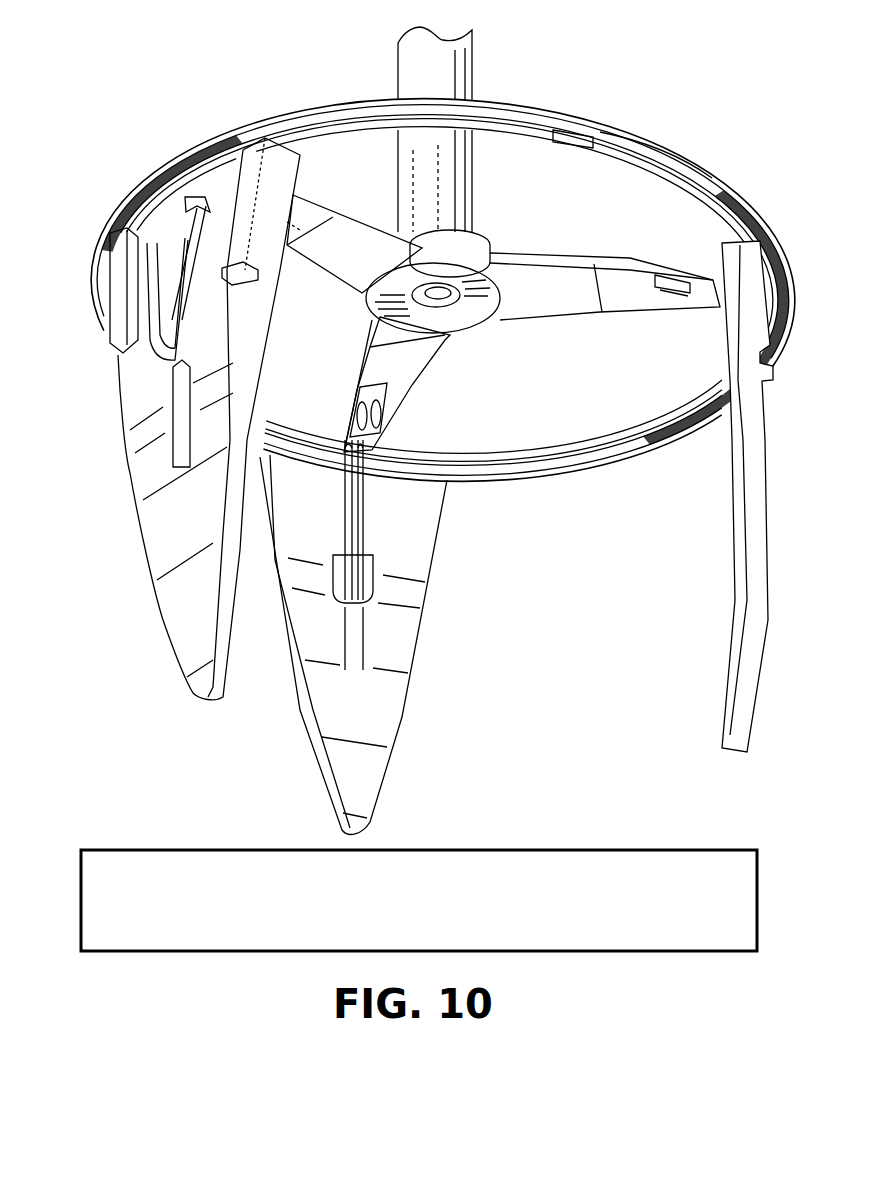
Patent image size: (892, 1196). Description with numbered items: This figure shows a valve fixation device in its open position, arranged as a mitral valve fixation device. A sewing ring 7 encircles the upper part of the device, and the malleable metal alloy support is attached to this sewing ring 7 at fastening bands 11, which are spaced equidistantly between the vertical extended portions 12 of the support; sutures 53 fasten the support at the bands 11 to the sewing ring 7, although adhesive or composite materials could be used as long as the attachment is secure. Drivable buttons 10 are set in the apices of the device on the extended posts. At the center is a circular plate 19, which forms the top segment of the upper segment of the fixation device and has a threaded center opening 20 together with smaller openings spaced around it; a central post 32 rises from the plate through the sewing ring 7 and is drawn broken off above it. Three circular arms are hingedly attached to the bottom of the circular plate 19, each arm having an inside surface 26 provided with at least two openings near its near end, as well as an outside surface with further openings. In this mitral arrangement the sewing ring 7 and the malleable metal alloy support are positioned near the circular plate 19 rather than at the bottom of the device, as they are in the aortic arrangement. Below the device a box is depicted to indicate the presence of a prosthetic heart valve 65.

The sewing ring 7 is at (708, 173).
The drivable buttons 10 is at (180, 328).
The bands 11 is at (573, 135).
The vertical extended portions 12 is at (649, 157).
The circular plate 19 is at (483, 240).
The threaded center opening 20 is at (445, 305).
The inside surface 26 is at (333, 232).
The center post 32 is at (445, 70).
The sutures 53 is at (212, 237).
The heart valve 65 is at (100, 850).